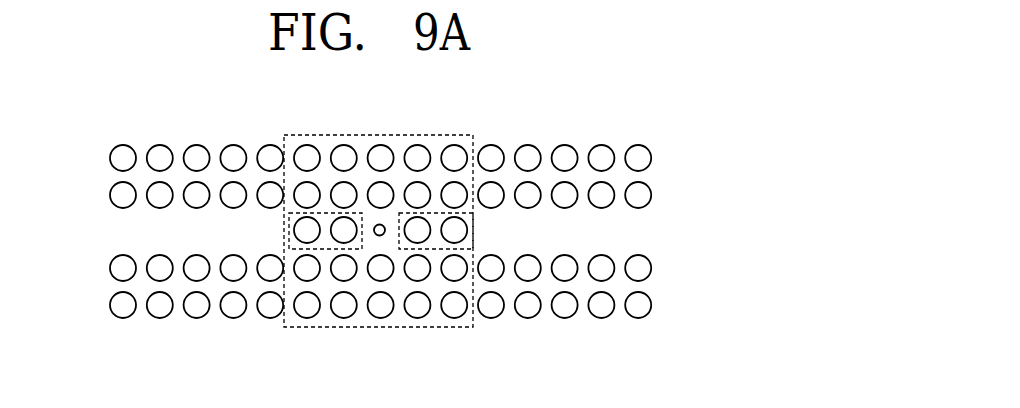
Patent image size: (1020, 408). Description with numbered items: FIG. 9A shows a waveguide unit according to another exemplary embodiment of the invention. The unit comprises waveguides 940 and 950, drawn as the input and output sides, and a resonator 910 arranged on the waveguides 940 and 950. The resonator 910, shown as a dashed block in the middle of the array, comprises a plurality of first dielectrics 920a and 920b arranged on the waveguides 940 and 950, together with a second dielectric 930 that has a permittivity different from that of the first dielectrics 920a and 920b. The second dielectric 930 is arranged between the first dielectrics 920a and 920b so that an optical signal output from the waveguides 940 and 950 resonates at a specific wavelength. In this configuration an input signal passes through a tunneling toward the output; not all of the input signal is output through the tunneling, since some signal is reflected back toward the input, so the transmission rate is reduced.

The resonator 910 is at (474, 326).
The first dielectric 920a is at (325, 249).
The first dielectric 920b is at (433, 249).
The second dielectric 930 is at (377, 236).
The waveguide 940 is at (128, 233).
The waveguide 950 is at (648, 233).